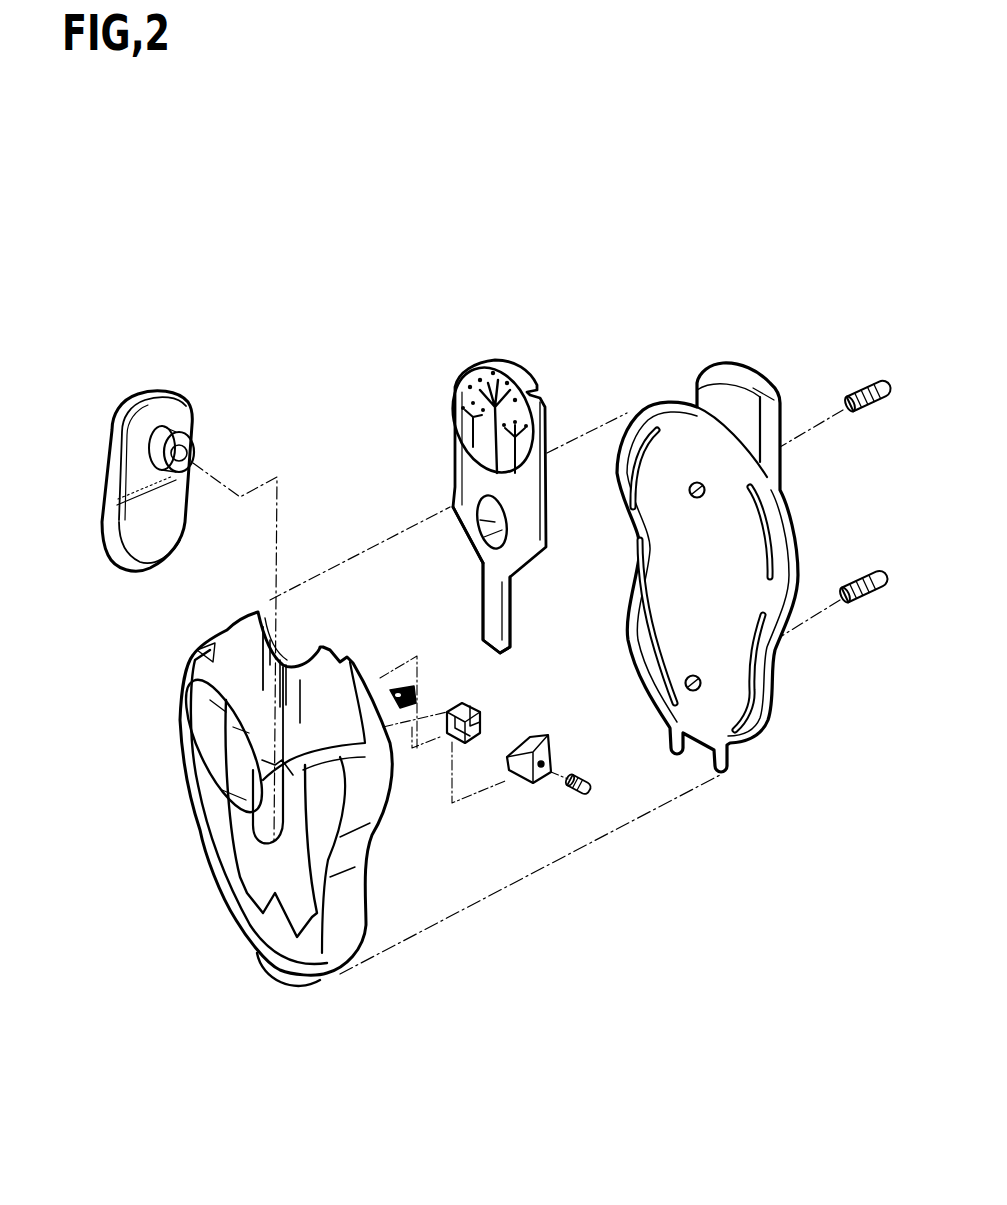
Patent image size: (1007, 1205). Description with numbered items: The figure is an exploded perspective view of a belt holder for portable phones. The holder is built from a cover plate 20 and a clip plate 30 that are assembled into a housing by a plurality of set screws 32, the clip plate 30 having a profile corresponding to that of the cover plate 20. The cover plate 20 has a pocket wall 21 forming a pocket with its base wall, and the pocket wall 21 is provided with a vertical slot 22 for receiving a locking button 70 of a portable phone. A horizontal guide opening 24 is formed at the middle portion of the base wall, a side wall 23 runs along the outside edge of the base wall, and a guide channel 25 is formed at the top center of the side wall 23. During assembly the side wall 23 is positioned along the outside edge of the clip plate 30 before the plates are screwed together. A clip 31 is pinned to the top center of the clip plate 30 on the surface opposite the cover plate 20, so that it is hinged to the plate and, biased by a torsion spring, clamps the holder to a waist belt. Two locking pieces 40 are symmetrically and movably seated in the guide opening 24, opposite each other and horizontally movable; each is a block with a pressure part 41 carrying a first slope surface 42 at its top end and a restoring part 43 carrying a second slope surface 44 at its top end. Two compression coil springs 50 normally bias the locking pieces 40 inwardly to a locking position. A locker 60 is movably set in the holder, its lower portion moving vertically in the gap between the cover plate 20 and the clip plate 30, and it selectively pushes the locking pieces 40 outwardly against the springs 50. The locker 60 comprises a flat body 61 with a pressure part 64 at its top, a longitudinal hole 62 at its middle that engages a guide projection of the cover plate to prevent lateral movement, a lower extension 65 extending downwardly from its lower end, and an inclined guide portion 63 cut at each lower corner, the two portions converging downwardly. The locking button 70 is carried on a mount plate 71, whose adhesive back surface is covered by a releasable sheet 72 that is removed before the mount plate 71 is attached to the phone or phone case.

The cover plate 20 is at (160, 698).
The pocket wall 21 is at (240, 720).
The vertical slot 22 is at (247, 807).
The side wall 23 is at (342, 658).
The guide opening 24 is at (262, 768).
The guide channel 25 is at (287, 636).
The clip plate 30 is at (800, 520).
The clip 31 is at (733, 382).
The set screws 32 is at (860, 600).
The locking pieces 40 is at (517, 781).
The pressure part 41 is at (449, 690).
The first slope surface 42 is at (487, 725).
The restoring part 43 is at (487, 712).
The second slope surface 44 is at (470, 705).
The compression coil springs 50 is at (589, 792).
The locker 60 is at (535, 356).
The flat body 61 is at (462, 457).
The longitudinal hole 62 is at (475, 540).
The inclined guide portion 63 is at (482, 535).
The pressure part 64 is at (457, 383).
The lower extension 65 is at (511, 590).
The locking button 70 is at (197, 447).
The mount plate 71 is at (173, 405).
The releasable sheet 72 is at (108, 443).